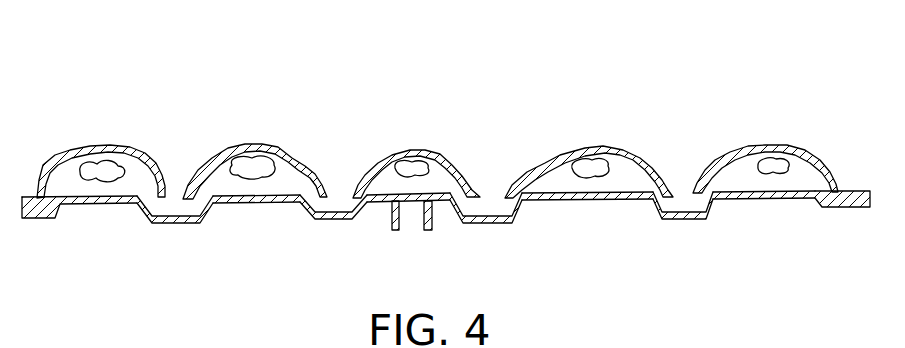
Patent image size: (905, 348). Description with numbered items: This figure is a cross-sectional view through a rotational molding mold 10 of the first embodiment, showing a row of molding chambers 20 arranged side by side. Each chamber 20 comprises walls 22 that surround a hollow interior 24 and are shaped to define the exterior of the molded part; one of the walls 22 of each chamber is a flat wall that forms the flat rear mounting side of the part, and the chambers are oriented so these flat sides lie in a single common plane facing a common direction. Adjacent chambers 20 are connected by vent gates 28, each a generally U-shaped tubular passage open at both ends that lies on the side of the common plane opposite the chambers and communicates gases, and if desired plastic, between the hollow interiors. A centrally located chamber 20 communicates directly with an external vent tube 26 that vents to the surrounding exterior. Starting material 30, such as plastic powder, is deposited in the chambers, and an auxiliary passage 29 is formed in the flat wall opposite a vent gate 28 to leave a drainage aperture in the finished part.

The rotational molding mold 10 is at (537, 71).
The molding chamber 20 is at (442, 158).
The wall 22 is at (44, 163).
The hollow interior 24 is at (140, 173).
The external vent tube 26 is at (413, 217).
The vent gate 28 is at (180, 210).
The auxiliary passage 29 is at (847, 200).
The starting material 30 is at (105, 168).